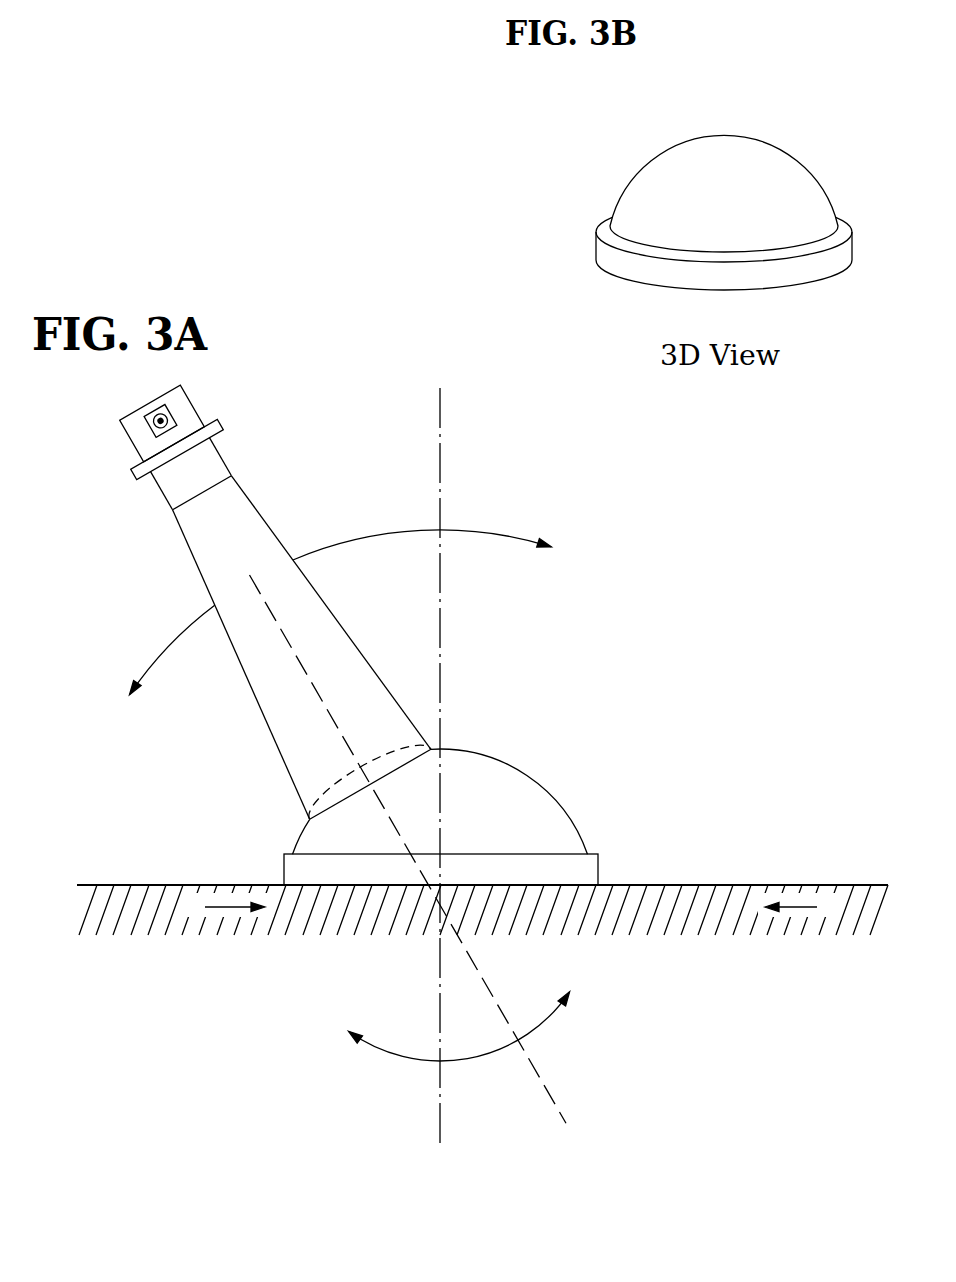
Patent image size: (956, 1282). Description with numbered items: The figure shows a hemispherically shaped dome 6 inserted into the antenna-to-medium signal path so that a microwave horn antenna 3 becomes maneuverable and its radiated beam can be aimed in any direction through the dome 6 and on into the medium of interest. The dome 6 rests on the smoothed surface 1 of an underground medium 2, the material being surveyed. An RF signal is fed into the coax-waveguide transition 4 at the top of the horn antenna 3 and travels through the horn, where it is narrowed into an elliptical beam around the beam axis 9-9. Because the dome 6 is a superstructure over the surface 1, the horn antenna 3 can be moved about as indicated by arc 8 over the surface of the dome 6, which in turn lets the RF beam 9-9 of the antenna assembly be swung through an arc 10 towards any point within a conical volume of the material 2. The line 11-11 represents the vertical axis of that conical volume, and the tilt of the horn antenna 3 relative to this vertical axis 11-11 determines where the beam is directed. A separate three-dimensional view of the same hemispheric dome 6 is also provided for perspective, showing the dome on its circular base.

In FIG. 3A, the smoothed surface 1 is at (743, 885).
In FIG. 3A, the underground medium 2 is at (510, 907).
In FIG. 3A, the microwave horn antenna 3 is at (272, 614).
In FIG. 3A, the coax-waveguide transition 4 is at (197, 414).
In FIG. 3B, the hemispherically shaped dome 6 is at (797, 197).
In FIG. 3A, the hemispherically shaped dome 6 is at (500, 785).
In FIG. 3A, the arc 8 is at (458, 532).
In FIG. 3A, the beam axis 9 is at (322, 698).
In FIG. 3A, the arc 10 is at (533, 1028).
In FIG. 3A, the vertical axis 11 is at (442, 447).